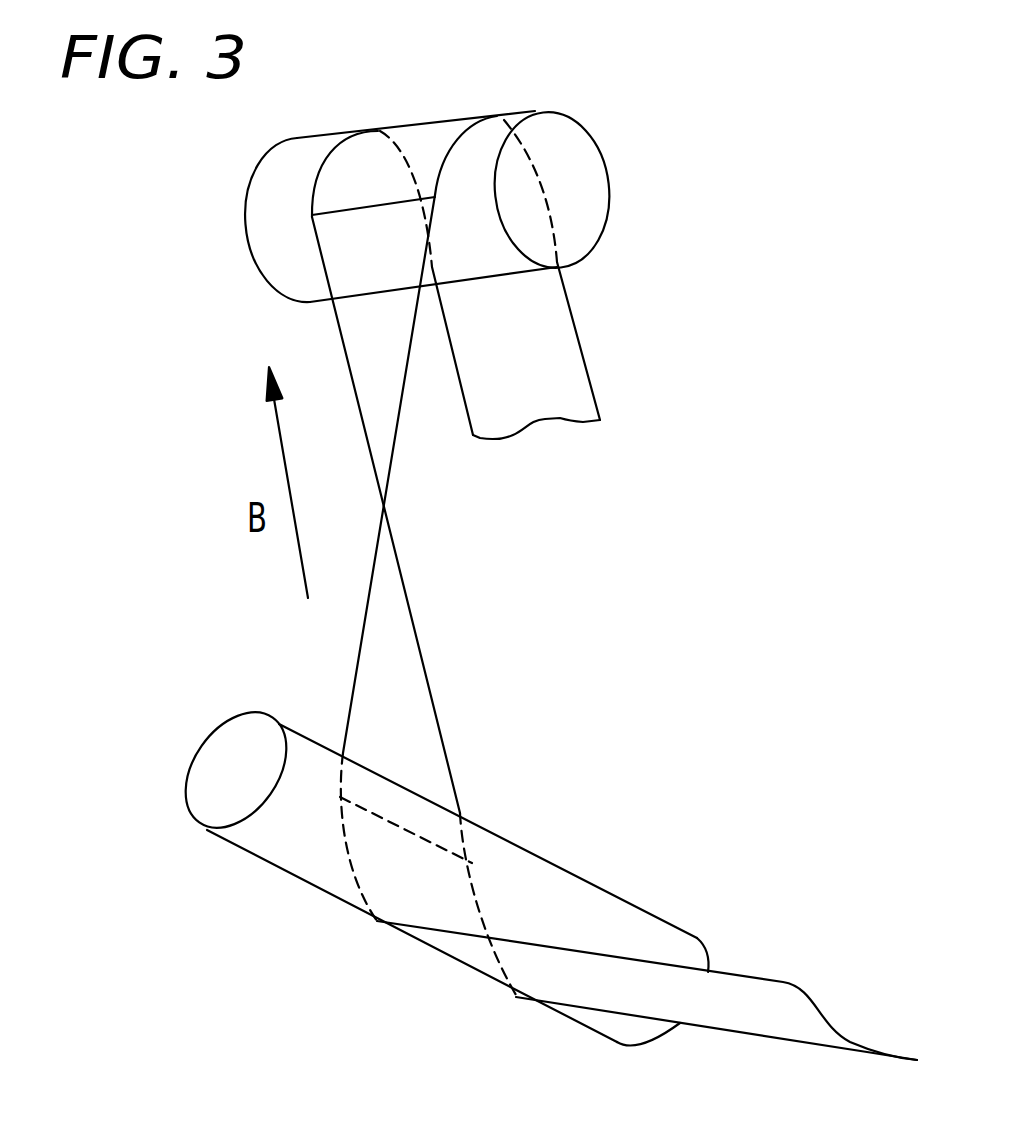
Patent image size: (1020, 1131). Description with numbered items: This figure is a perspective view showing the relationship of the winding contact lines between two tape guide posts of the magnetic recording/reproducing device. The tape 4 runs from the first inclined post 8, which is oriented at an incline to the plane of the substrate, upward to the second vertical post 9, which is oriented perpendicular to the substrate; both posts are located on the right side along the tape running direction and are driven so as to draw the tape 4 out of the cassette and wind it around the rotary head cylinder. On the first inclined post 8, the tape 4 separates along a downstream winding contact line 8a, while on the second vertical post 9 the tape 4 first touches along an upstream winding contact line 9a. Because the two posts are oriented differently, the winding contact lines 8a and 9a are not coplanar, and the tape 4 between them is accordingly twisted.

The second vertical post 9 is at (587, 133).
The upstream winding contact line 9a is at (377, 197).
The tape 4 is at (398, 680).
The first inclined post 8 is at (572, 870).
The downstream winding contact line 8a is at (417, 835).